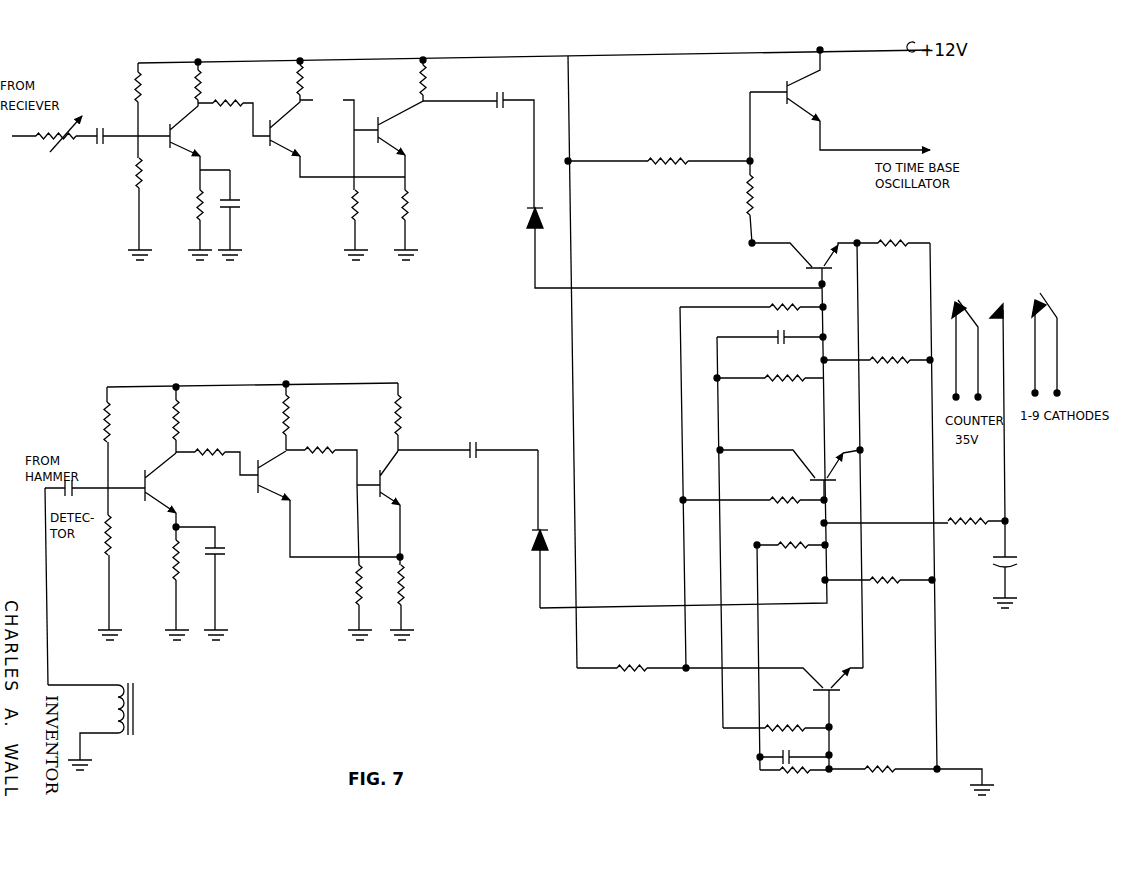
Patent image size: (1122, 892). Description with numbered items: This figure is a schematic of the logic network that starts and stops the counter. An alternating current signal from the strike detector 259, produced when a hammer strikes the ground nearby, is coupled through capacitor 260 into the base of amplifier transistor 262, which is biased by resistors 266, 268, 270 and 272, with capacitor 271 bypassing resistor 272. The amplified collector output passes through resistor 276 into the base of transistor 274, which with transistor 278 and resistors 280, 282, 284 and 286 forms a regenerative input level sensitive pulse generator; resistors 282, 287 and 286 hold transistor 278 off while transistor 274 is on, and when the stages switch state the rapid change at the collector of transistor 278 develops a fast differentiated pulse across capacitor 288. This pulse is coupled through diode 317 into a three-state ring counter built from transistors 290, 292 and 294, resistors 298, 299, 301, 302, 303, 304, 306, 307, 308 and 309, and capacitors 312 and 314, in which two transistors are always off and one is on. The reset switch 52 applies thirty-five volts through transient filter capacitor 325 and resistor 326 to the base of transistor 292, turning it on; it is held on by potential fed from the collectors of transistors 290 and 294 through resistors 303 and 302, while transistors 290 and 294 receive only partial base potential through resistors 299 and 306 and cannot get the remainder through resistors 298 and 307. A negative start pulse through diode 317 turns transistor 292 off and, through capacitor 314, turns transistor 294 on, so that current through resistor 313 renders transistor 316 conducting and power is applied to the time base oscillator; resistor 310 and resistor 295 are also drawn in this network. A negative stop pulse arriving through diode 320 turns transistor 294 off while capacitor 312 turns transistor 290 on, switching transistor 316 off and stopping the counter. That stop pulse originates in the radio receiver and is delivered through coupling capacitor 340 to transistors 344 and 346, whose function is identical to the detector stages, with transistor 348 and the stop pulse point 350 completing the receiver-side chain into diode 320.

The coupling capacitor 340 is at (100, 148).
The transistor 344 is at (186, 139).
The transistor 346 is at (283, 138).
The transistor 348 is at (394, 138).
The stop pulse capacitor 350 is at (488, 148).
The diode 320 is at (527, 218).
The resistor 313 is at (683, 152).
The resistor 310 is at (742, 207).
The transistor 316 is at (792, 92).
The transistor 294 is at (812, 262).
The resistor 309 is at (878, 229).
The resistor 306 is at (770, 305).
The capacitor 314 is at (778, 331).
The resistor 308 is at (897, 361).
The resistor 307 is at (788, 380).
The transistor 292 is at (818, 468).
The resistor 303 is at (787, 500).
The resistor 302 is at (800, 534).
The resistor 304 is at (895, 582).
The resistor 326 is at (966, 520).
The transient filter capacitor 325 is at (1016, 568).
The resistor 295 is at (649, 665).
The resistor 298 is at (805, 725).
The capacitor 312 is at (765, 747).
The resistor 299 is at (786, 773).
The transistor 290 is at (814, 680).
The resistor 301 is at (894, 752).
The resistor 266 is at (107, 414).
The resistor 270 is at (180, 416).
The resistor 276 is at (214, 450).
The amplifier transistor 262 is at (160, 492).
The capacitor 260 is at (78, 494).
The resistor 268 is at (105, 566).
The resistor 272 is at (176, 570).
The capacitor 271 is at (222, 558).
The strike detector 259 is at (90, 726).
The resistor 280 is at (294, 416).
The resistor 284 is at (402, 414).
The resistor 282 is at (323, 450).
The transistor 274 is at (275, 486).
The transistor 278 is at (387, 487).
The capacitor 288 is at (471, 442).
The resistor 287 is at (358, 588).
The resistor 286 is at (404, 590).
The diode 317 is at (525, 548).
The reset switch 52 is at (1077, 291).